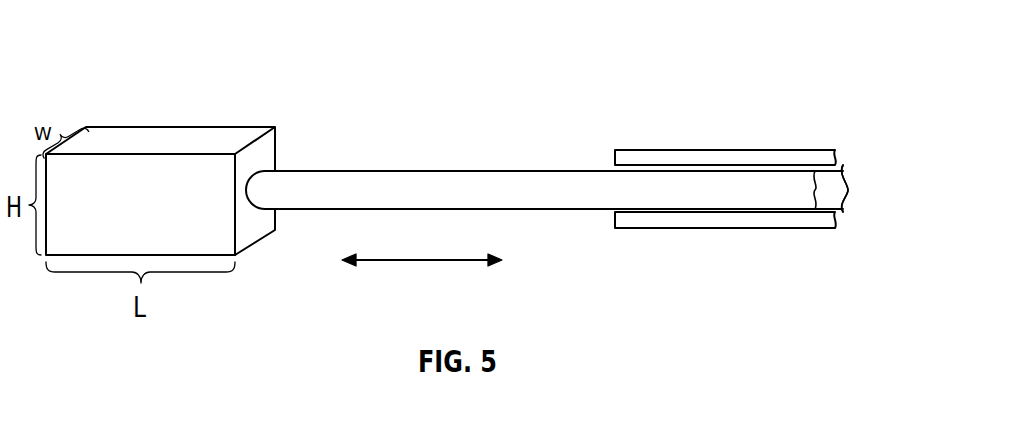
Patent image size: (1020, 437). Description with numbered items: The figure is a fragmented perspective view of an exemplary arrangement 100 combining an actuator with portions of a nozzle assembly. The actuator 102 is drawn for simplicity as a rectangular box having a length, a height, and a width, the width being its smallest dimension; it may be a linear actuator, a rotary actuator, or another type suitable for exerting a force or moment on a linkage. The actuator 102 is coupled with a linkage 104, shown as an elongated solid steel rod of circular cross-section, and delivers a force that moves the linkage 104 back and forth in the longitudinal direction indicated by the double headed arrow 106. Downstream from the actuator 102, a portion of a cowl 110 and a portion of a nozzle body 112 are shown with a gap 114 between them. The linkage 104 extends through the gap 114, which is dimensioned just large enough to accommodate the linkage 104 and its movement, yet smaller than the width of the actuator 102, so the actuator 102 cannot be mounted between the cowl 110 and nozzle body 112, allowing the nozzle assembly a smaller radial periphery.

The arrangement 100 is at (139, 36).
The actuator 102 is at (165, 138).
The linkage 104 is at (392, 171).
The double headed arrow 106 is at (415, 262).
The cowl 110 is at (692, 150).
The nozzle body 112 is at (692, 228).
The gap 114 is at (850, 190).